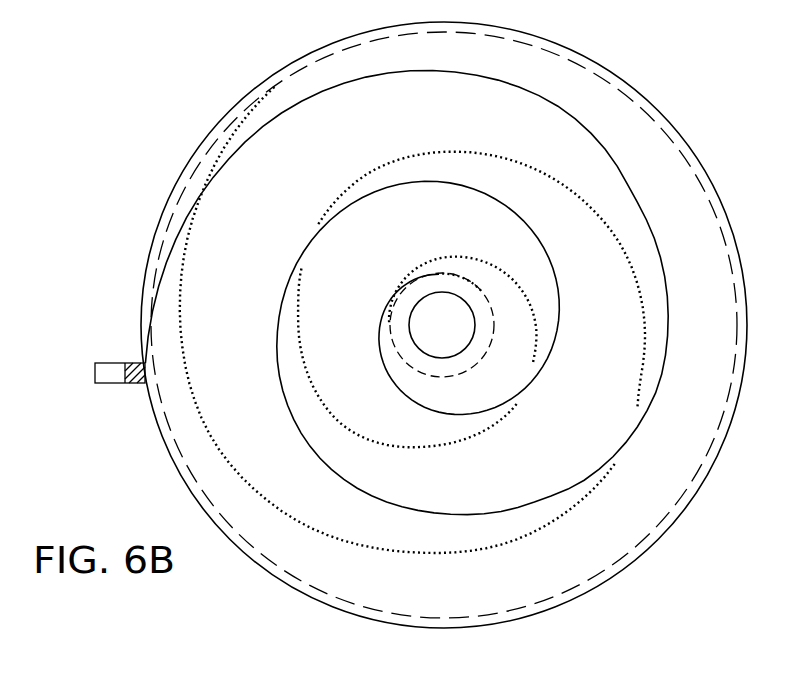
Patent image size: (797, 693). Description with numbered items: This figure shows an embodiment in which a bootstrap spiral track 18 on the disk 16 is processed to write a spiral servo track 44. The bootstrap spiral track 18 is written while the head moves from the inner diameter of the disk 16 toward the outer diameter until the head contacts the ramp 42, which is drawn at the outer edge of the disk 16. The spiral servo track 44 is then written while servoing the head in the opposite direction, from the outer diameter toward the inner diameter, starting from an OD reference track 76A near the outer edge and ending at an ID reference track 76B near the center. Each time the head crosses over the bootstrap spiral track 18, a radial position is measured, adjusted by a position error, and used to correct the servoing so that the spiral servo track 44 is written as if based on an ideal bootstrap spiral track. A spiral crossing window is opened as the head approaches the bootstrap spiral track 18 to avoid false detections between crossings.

The disk 16 is at (638, 66).
The bootstrap spiral track 18 is at (398, 293).
The spiral servo track 44 is at (398, 319).
The ramp 42 is at (107, 384).
The OD reference track 76A is at (314, 587).
The ID reference track 76B is at (496, 334).